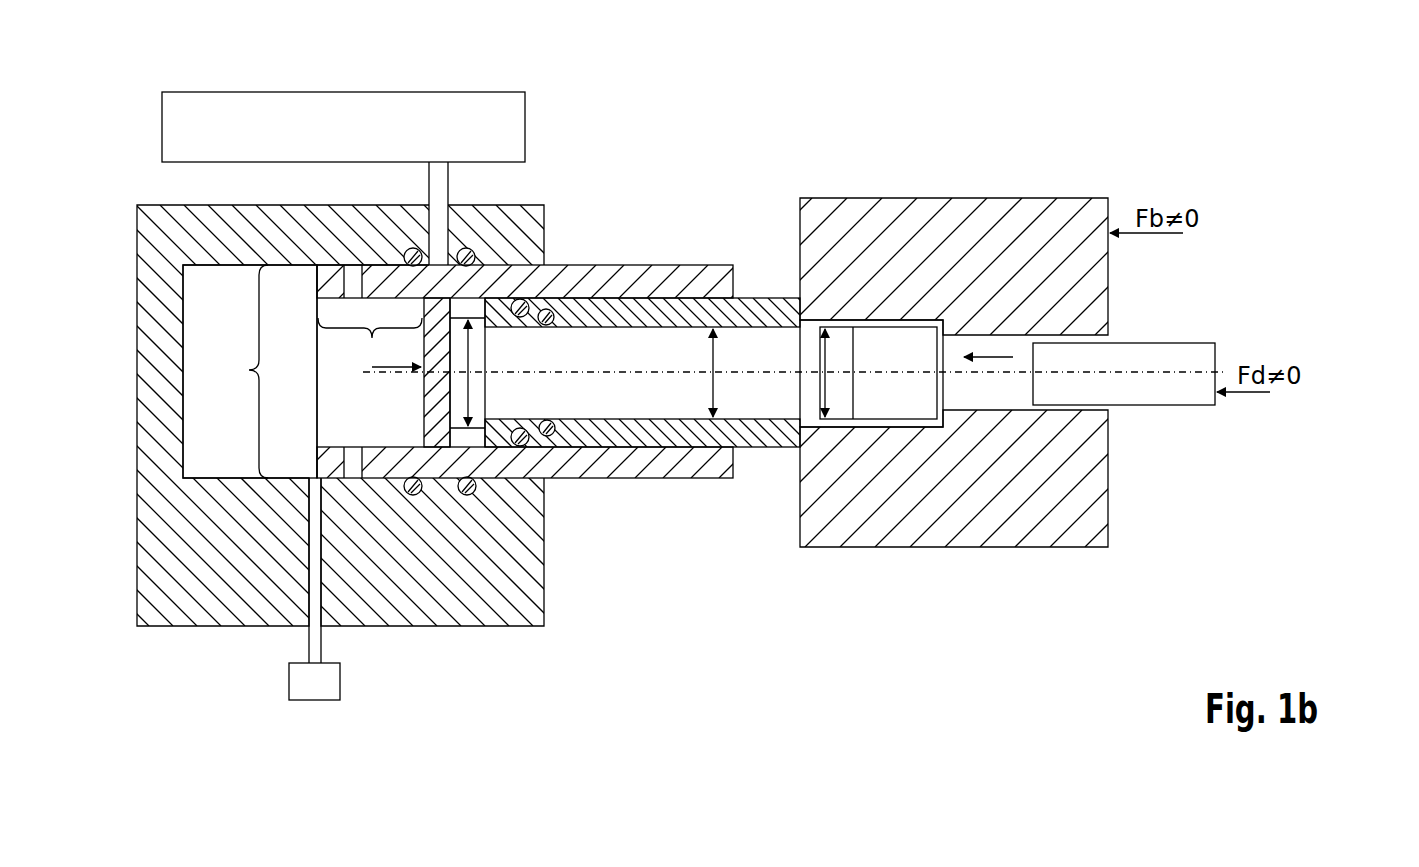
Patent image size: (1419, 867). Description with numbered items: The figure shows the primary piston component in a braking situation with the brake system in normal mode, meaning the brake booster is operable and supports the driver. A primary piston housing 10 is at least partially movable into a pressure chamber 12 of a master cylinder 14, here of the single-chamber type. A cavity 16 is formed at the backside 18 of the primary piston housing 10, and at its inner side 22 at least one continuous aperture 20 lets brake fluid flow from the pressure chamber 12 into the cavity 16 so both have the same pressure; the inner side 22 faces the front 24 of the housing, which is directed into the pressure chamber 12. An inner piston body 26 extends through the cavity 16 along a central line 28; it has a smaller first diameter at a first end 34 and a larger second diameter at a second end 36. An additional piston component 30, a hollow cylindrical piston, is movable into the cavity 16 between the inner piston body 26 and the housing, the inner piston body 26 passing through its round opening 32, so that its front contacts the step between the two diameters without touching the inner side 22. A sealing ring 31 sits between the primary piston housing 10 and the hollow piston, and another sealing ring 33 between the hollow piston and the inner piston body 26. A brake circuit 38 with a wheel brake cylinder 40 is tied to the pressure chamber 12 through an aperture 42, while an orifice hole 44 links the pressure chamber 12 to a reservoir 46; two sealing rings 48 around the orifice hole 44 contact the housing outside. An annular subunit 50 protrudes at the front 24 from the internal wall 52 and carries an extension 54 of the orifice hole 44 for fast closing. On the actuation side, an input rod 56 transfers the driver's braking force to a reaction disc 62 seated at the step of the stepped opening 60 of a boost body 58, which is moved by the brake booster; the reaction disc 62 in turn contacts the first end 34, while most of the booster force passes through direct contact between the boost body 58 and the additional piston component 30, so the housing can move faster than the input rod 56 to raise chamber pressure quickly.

The primary piston housing 10 is at (688, 282).
The pressure chamber 12 is at (228, 337).
The master cylinder 14 is at (527, 597).
The cavity 16 is at (741, 453).
The backside 18 is at (738, 290).
The continuous aperture 20 is at (445, 312).
The inner side 22 is at (452, 395).
The front 24 is at (316, 285).
The inner piston body 26 is at (641, 396).
The central line 28 is at (1177, 375).
The additional piston component 30 is at (766, 438).
The sealing ring 31 is at (527, 301).
The round opening 32 is at (806, 321).
The sealing ring 33 is at (552, 311).
The first end 34 is at (809, 432).
The second end 36 is at (478, 433).
The brake circuit 38 is at (316, 637).
The wheel brake cylinder 40 is at (327, 683).
The aperture 42 is at (313, 560).
The orifice hole 44 is at (438, 222).
The reservoir 46 is at (516, 130).
The sealing rings 48 is at (423, 503).
The annular subunit 50 is at (370, 344).
The internal wall 52 is at (413, 248).
The extension 54 is at (352, 294).
The input rod 56 is at (1169, 400).
The boost body 58 is at (995, 510).
The opening 60 is at (993, 359).
The reaction disc 62 is at (865, 400).